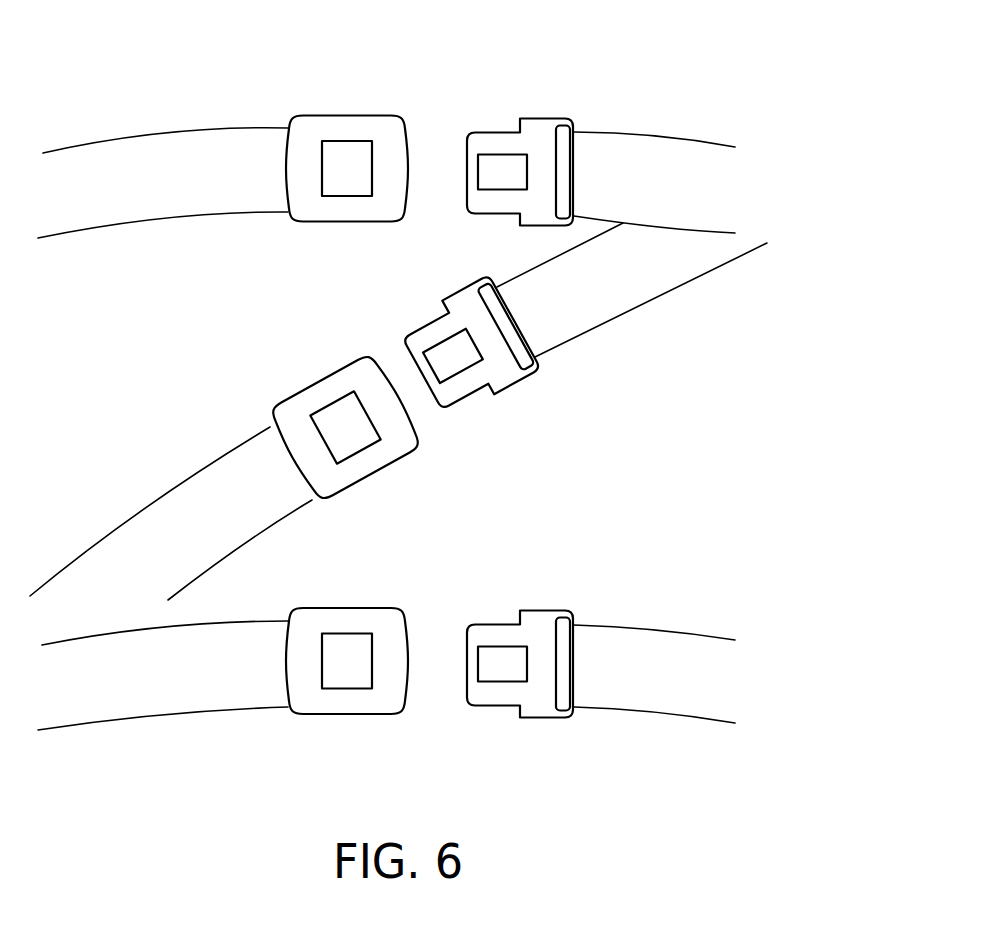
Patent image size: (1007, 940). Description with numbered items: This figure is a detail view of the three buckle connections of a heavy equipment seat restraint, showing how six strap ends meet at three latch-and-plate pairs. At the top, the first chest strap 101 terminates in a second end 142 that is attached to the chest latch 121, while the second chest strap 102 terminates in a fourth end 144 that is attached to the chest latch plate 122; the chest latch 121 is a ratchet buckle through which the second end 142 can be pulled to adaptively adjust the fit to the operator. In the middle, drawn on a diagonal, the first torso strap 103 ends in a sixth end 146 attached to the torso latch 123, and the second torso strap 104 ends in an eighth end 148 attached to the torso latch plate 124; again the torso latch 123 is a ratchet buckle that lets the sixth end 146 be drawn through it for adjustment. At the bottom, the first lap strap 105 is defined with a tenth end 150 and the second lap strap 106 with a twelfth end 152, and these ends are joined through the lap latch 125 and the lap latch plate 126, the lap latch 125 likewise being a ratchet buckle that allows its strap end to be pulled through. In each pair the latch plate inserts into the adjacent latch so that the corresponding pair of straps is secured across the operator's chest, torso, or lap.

The first chest strap 101 is at (163, 183).
The second chest strap 102 is at (642, 134).
The first torso strap 103 is at (233, 499).
The second torso strap 104 is at (632, 320).
The first lap strap 105 is at (167, 666).
The second lap strap 106 is at (654, 668).
The chest latch 121 is at (350, 116).
The chest latch plate 122 is at (490, 132).
The torso latch 123 is at (305, 390).
The torso latch plate 124 is at (428, 326).
The lap latch 125 is at (350, 607).
The lap latch plate 126 is at (502, 622).
The second end 142 is at (259, 182).
The fourth end 144 is at (583, 175).
The sixth end 146 is at (284, 502).
The eighth end 148 is at (542, 330).
The tenth end 150 is at (254, 637).
The twelfth end 152 is at (590, 653).